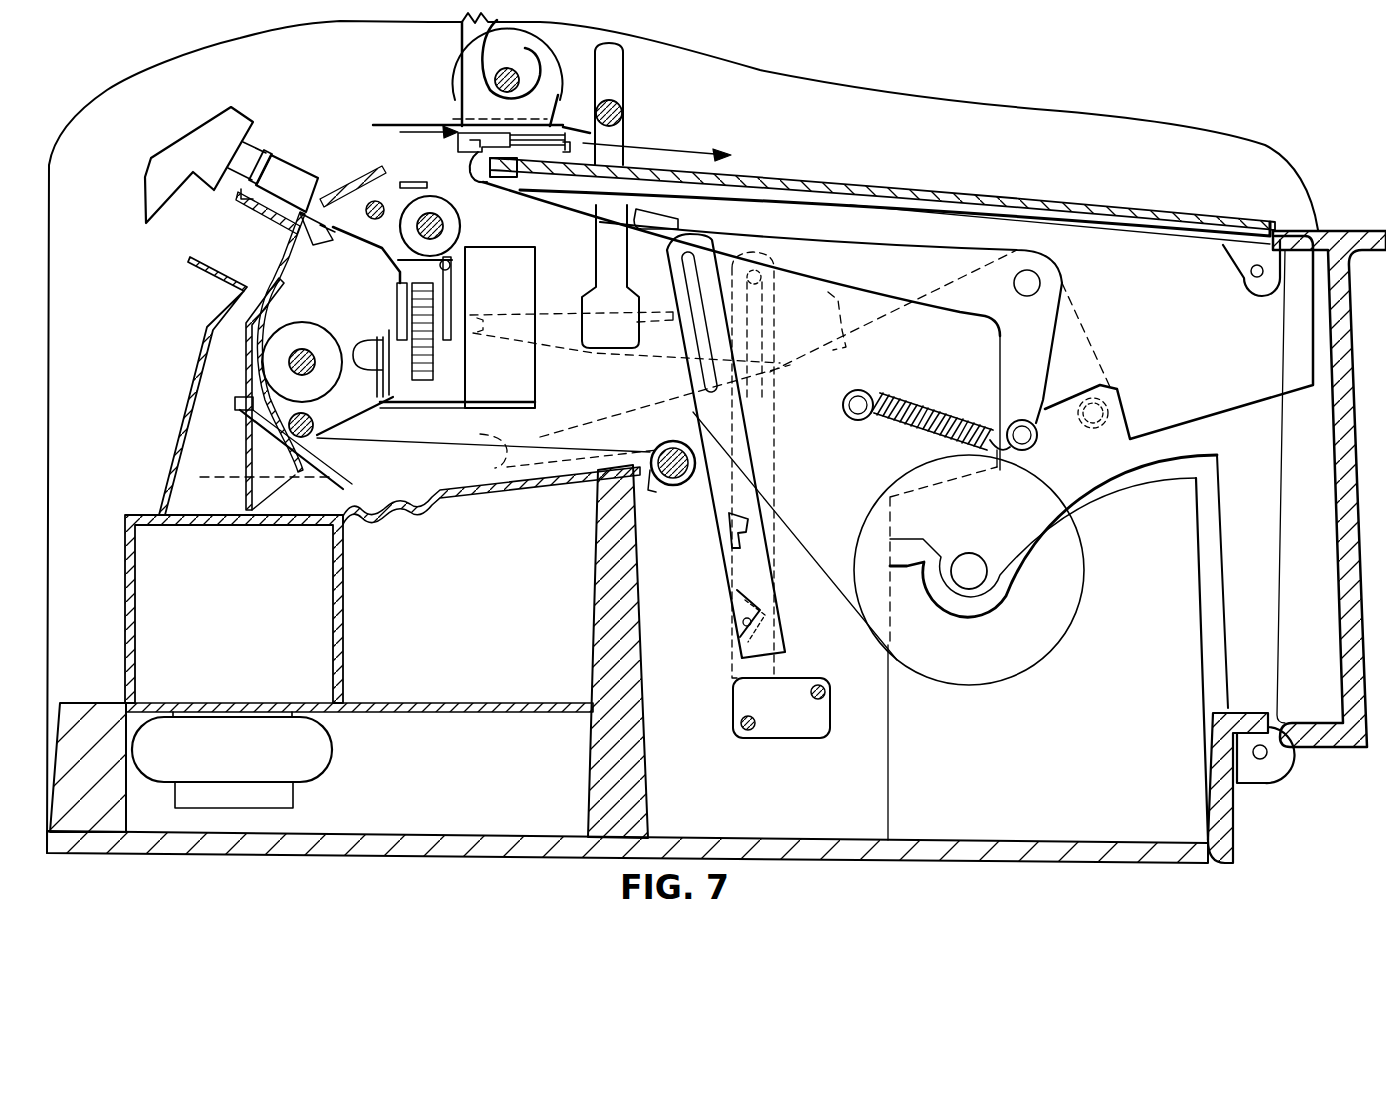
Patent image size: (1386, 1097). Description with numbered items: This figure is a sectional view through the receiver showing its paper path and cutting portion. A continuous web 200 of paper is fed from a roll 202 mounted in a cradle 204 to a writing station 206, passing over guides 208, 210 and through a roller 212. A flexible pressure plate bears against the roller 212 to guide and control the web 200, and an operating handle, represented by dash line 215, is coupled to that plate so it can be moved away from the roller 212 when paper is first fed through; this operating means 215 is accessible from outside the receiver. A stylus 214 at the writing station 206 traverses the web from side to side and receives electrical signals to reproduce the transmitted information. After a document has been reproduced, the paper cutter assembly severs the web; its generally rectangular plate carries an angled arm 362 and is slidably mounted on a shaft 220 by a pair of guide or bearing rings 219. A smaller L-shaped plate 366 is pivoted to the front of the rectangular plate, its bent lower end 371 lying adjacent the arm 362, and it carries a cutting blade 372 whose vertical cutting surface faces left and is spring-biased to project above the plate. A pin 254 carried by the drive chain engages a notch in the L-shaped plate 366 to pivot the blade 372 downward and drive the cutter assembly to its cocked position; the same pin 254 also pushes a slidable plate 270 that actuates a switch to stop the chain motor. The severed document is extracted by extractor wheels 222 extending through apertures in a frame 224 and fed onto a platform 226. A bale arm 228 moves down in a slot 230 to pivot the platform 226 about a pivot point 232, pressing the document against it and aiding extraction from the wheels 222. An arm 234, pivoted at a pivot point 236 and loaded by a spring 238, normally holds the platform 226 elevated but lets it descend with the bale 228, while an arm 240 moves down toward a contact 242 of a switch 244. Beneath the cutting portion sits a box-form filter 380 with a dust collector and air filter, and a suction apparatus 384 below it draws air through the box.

The continuous web 200 is at (785, 556).
The roll 202 is at (925, 466).
The cradle 204 is at (1098, 479).
The writing station 206 is at (262, 264).
The guide 208 is at (660, 483).
The guide 210 is at (313, 418).
The roller 212 is at (318, 325).
The stylus 214 is at (315, 210).
The operating handle 215 is at (234, 471).
The guide or bearing rings 219 is at (433, 198).
The shaft 220 is at (456, 235).
The extractor wheels 222 is at (537, 46).
The frame 224 is at (396, 122).
The platform 226 is at (1062, 204).
The bale arm 228 is at (627, 116).
The slot 230 is at (618, 136).
The pivot point 232 is at (1250, 274).
The arm 234 is at (862, 280).
The pivot point 236 is at (1035, 280).
The spring 238 is at (923, 401).
The arm 240 is at (743, 487).
The contact 242 is at (758, 679).
The switch 244 is at (773, 730).
The pin 254 is at (410, 296).
The plate 270 is at (452, 281).
The arm 362 is at (387, 412).
The L-shaped plate 366 is at (392, 272).
The lower end 371 is at (400, 313).
The cutting blade 372 is at (316, 238).
The filter 380 is at (343, 613).
The suction apparatus 384 is at (331, 751).